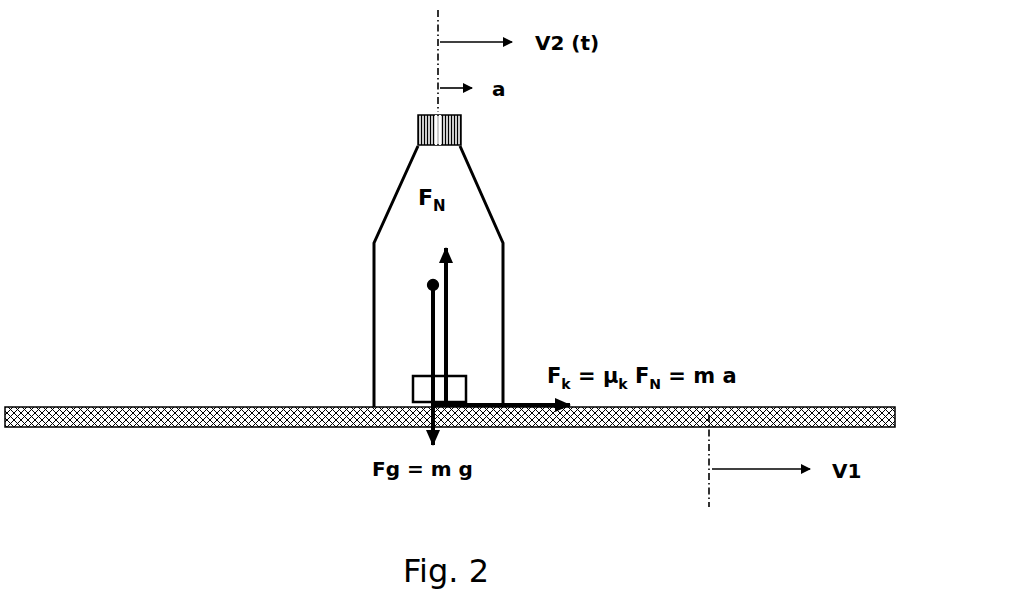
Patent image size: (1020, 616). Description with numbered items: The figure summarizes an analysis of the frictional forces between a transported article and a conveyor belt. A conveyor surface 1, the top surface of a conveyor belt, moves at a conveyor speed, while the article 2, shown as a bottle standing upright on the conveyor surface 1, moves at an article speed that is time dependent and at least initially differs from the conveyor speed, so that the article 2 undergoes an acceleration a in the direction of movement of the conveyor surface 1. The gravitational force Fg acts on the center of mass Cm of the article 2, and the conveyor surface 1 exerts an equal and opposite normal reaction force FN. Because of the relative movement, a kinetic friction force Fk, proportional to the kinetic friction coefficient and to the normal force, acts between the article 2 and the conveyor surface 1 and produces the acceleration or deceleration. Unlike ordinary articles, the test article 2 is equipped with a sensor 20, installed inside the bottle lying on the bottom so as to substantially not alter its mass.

The conveyor surface 1 is at (160, 398).
The article 2 is at (330, 199).
The sensor 20 is at (413, 392).
The center of mass Cm is at (427, 285).